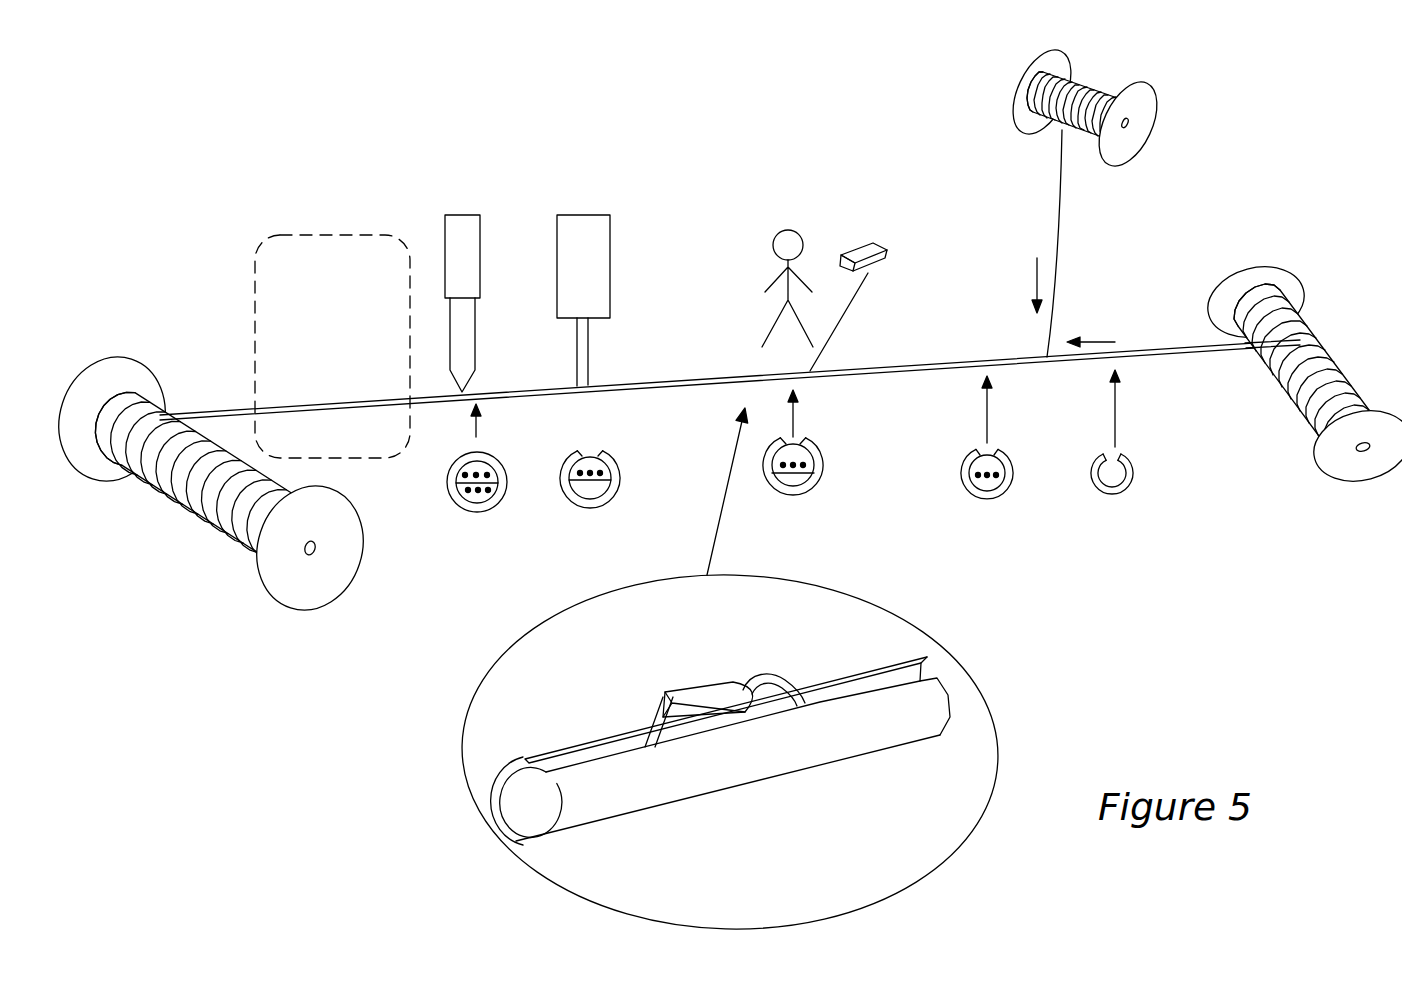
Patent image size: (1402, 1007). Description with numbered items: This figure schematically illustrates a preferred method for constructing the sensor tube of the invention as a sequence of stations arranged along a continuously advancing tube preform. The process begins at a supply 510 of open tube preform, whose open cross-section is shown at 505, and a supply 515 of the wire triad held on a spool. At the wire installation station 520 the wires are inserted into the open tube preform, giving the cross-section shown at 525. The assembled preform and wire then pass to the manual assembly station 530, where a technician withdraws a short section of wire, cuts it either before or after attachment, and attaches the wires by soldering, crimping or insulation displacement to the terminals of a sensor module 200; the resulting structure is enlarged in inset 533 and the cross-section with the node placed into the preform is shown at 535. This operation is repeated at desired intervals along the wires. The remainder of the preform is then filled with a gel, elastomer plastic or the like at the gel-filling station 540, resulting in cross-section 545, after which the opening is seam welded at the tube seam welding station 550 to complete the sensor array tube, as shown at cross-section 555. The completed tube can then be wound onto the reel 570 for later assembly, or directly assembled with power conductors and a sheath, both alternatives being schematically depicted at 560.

The reel 570 is at (128, 362).
The power conductor and sheath assembly 560 is at (336, 234).
The tube seam welding station 550 is at (498, 316).
The gel-filling station 540 is at (641, 287).
The manual assembly station 530 is at (894, 236).
The sensor module 200 is at (878, 263).
The supply of wire triad 515 is at (1031, 70).
The wire installation station 520 is at (1147, 243).
The supply of open tube preform 510 is at (1272, 264).
The open tube preform cross-section 505 is at (1133, 466).
The tube and wire cross-section 525 is at (1003, 492).
The tube with sensor node cross-section 535 is at (818, 473).
The gel-filled tube cross-section 545 is at (617, 490).
The seam-welded tube cross-section 555 is at (498, 507).
The inset of sensor node attachment 533 is at (800, 663).